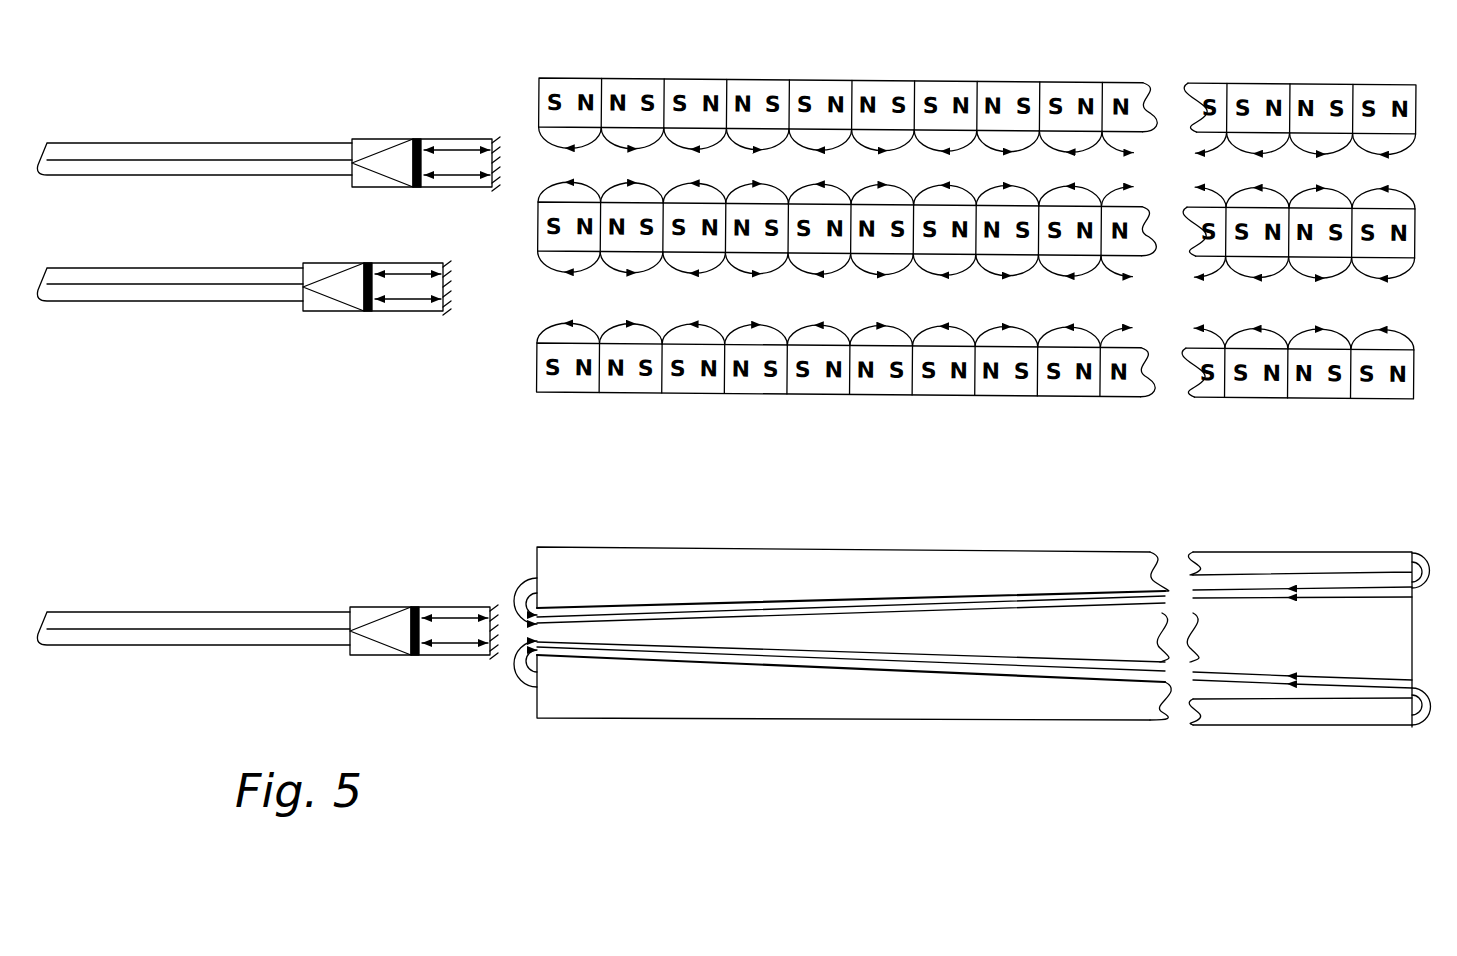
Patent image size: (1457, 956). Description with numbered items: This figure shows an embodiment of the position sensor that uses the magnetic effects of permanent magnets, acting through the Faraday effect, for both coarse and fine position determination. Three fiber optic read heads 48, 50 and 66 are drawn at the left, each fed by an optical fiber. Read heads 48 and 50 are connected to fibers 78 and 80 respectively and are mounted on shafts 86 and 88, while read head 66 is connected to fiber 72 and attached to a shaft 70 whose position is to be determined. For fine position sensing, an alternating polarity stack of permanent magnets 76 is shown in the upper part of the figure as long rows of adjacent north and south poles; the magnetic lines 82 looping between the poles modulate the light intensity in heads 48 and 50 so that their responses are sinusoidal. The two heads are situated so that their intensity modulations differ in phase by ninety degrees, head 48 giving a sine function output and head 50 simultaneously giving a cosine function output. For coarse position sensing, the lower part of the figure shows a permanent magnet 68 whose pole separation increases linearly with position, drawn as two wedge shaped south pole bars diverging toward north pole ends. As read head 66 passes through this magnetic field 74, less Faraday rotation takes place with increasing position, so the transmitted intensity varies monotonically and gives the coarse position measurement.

The read head 48 is at (363, 139).
The read head 50 is at (303, 263).
The read head 66 is at (362, 607).
The permanent magnet 68 is at (878, 549).
The shaft 70 is at (155, 612).
The fiber 72 is at (185, 629).
The magnetic field 74 is at (1178, 600).
The alternating polarity stack of permanent magnets 76 is at (588, 78).
The fiber 78 is at (185, 160).
The fiber 80 is at (195, 287).
The magnetic lines 82 is at (540, 130).
The shaft 86 is at (155, 143).
The shaft 88 is at (160, 302).